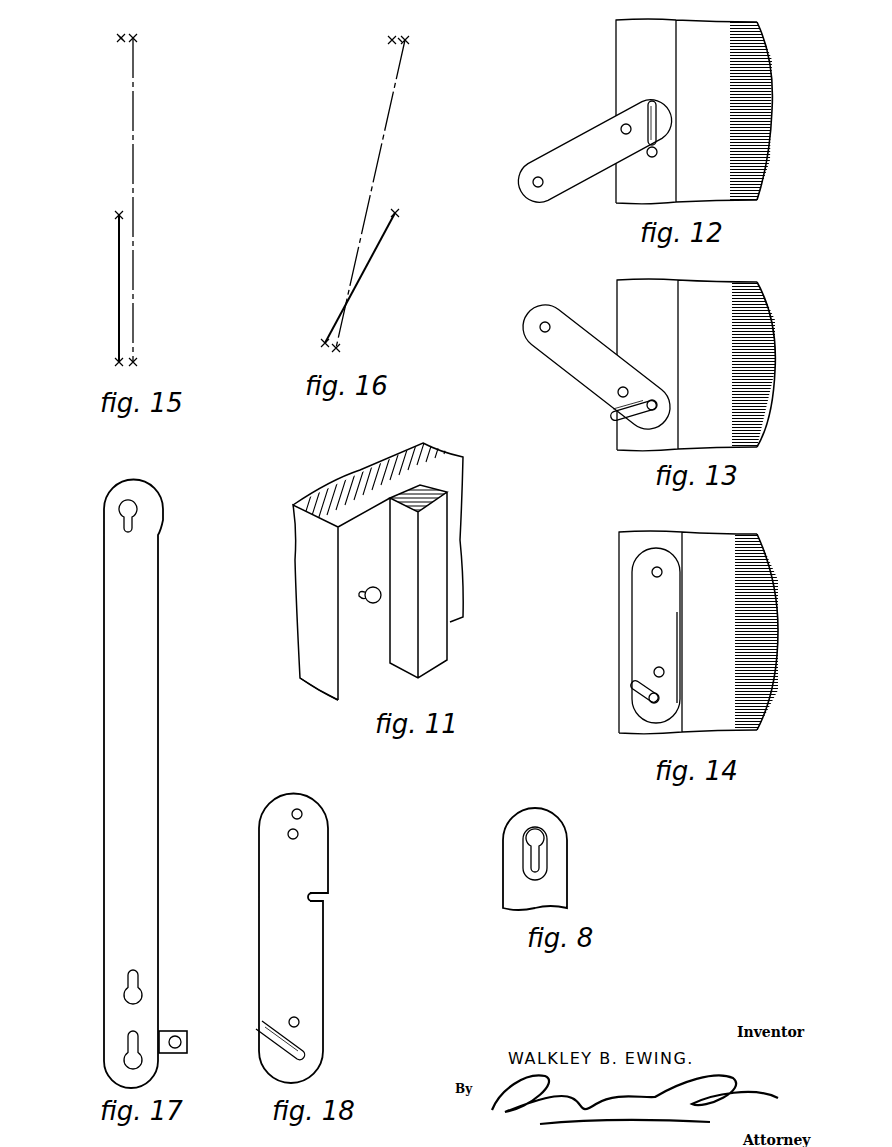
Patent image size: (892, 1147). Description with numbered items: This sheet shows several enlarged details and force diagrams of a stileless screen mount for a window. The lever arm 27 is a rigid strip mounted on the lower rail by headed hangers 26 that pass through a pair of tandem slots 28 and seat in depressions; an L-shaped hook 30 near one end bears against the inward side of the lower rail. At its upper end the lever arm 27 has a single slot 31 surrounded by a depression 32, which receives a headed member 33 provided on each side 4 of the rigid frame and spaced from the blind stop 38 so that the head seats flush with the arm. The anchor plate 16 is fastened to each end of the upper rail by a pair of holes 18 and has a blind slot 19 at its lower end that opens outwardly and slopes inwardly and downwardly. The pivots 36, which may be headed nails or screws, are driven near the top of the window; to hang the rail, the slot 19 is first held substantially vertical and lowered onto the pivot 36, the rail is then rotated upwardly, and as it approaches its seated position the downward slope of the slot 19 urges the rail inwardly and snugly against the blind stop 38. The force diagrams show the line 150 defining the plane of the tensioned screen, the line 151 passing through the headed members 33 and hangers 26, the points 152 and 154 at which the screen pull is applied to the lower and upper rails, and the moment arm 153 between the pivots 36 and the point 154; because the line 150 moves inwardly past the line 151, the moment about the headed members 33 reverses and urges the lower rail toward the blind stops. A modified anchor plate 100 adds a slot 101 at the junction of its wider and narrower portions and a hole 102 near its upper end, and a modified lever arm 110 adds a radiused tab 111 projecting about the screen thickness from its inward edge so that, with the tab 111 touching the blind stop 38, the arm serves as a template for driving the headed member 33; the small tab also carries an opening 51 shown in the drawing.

In FIG. 11, the side 4 is at (458, 530).
In FIG. 12, the anchor plate 16 is at (578, 140).
In FIG. 13, the anchor plate 16 is at (580, 335).
In FIG. 14, the anchor plate 16 is at (641, 578).
In FIG. 18, the holes 18 is at (289, 832).
In FIG. 12, the blind slot 19 is at (650, 103).
In FIG. 13, the blind slot 19 is at (614, 421).
In FIG. 14, the blind slot 19 is at (630, 686).
In FIG. 18, the blind slot 19 is at (262, 1032).
In FIG. 15, the hangers 26 is at (120, 363).
In FIG. 16, the hangers 26 is at (325, 344).
In FIG. 8, the lever arm 27 is at (518, 894).
In FIG. 17, the slots 28 is at (138, 978).
In FIG. 17, the L-shaped hook 30 is at (190, 1045).
In FIG. 8, the slot 31 is at (537, 866).
In FIG. 8, the depression 32 is at (529, 858).
In FIG. 15, the headed member 33 is at (118, 215).
In FIG. 16, the headed member 33 is at (397, 213).
In FIG. 11, the headed member 33 is at (372, 604).
In FIG. 15, the pivots 36 is at (120, 38).
In FIG. 16, the pivots 36 is at (392, 40).
In FIG. 12, the pivots 36 is at (651, 158).
In FIG. 13, the pivots 36 is at (652, 400).
In FIG. 14, the pivots 36 is at (648, 701).
In FIG. 12, the blind stop 38 is at (674, 60).
In FIG. 13, the blind stop 38 is at (676, 322).
In FIG. 14, the blind stop 38 is at (679, 545).
In FIG. 11, the blind stop 38 is at (438, 570).
In FIG. 17, the hole 51 is at (178, 1049).
In FIG. 18, the modified anchor plate 100 is at (318, 858).
In FIG. 18, the slot 101 is at (330, 898).
In FIG. 18, the hole 102 is at (296, 808).
In FIG. 17, the modified lever arm 110 is at (145, 690).
In FIG. 17, the radiused tab 111 is at (166, 490).
In FIG. 15, the line 150 is at (137, 148).
In FIG. 16, the line 150 is at (379, 145).
In FIG. 15, the line 151 is at (117, 275).
In FIG. 16, the line 151 is at (373, 255).
In FIG. 15, the point 152 is at (136, 362).
In FIG. 16, the point 152 is at (340, 348).
In FIG. 15, the moment arm 153 is at (124, 43).
In FIG. 16, the moment arm 153 is at (400, 45).
In FIG. 15, the point 154 is at (136, 38).
In FIG. 16, the point 154 is at (407, 40).